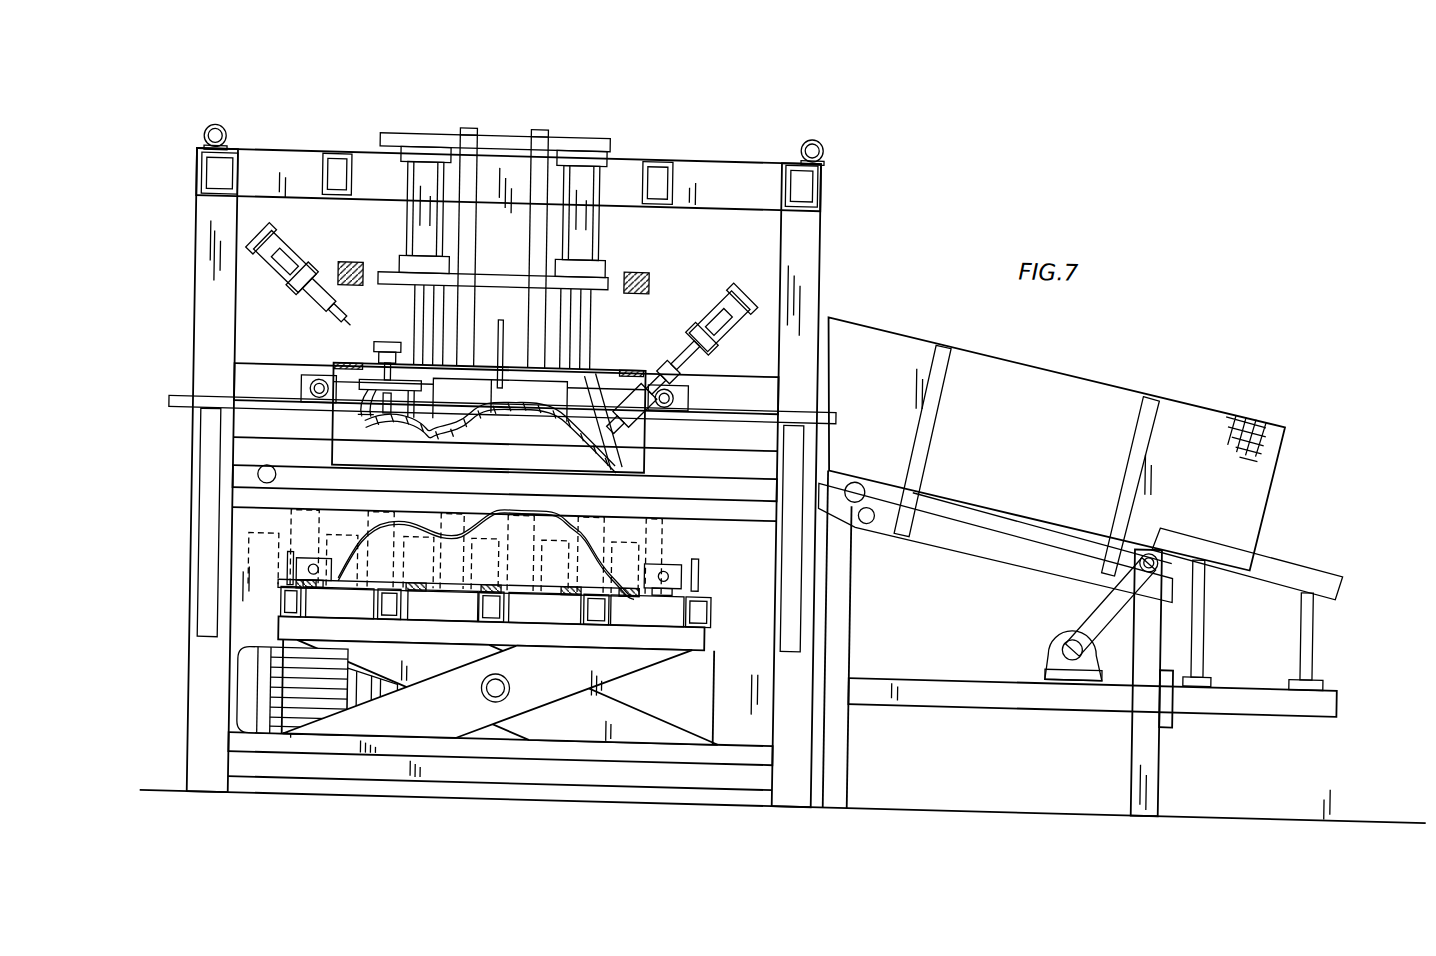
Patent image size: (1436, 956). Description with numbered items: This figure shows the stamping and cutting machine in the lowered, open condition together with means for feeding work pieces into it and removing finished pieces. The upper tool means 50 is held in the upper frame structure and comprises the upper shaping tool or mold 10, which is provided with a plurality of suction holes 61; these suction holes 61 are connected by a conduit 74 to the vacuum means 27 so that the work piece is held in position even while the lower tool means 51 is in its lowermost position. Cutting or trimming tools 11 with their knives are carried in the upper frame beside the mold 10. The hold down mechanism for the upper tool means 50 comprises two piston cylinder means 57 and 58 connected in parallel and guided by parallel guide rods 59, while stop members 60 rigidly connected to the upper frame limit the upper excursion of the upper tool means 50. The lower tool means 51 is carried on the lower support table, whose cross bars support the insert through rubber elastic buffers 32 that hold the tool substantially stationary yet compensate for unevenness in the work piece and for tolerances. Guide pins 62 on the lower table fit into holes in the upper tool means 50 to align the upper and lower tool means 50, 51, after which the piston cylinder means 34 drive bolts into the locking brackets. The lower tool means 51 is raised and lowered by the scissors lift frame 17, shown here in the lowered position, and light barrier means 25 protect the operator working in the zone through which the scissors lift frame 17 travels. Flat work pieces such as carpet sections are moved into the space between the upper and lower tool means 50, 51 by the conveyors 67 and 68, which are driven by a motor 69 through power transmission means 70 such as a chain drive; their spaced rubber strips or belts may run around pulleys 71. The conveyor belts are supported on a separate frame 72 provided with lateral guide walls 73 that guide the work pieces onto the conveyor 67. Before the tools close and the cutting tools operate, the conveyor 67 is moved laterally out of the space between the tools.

The upper shaping tool 10 is at (478, 406).
The cutting or trimming tools 11 is at (310, 255).
The scissors lift frame 17 is at (546, 667).
The light barrier means 25 is at (215, 481).
The vacuum means 27 is at (258, 545).
The rubber elastic buffers 32 is at (343, 587).
The piston cylinder means 34 is at (318, 554).
The upper tool means 50 is at (612, 342).
The lower tool means 51 is at (715, 638).
The piston cylinder means 57 is at (409, 228).
The piston cylinder means 58 is at (606, 160).
The parallel guide rods 59 is at (480, 160).
The stop members 60 is at (358, 258).
The suction holes 61 is at (428, 432).
The guide pins 62 is at (292, 578).
The conveyor 67 is at (722, 468).
The conveyor 68 is at (1003, 522).
The motor 69 is at (1055, 632).
The power transmission means 70 is at (1106, 597).
The pulleys 71 is at (272, 463).
The separate frame 72 is at (1052, 700).
The lateral guide walls 73 is at (1158, 372).
The conduit 74 is at (501, 312).